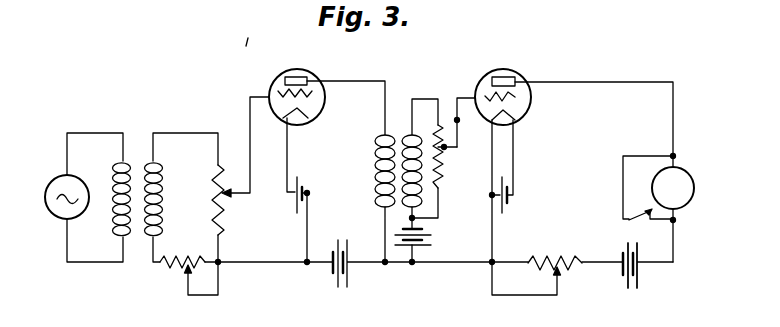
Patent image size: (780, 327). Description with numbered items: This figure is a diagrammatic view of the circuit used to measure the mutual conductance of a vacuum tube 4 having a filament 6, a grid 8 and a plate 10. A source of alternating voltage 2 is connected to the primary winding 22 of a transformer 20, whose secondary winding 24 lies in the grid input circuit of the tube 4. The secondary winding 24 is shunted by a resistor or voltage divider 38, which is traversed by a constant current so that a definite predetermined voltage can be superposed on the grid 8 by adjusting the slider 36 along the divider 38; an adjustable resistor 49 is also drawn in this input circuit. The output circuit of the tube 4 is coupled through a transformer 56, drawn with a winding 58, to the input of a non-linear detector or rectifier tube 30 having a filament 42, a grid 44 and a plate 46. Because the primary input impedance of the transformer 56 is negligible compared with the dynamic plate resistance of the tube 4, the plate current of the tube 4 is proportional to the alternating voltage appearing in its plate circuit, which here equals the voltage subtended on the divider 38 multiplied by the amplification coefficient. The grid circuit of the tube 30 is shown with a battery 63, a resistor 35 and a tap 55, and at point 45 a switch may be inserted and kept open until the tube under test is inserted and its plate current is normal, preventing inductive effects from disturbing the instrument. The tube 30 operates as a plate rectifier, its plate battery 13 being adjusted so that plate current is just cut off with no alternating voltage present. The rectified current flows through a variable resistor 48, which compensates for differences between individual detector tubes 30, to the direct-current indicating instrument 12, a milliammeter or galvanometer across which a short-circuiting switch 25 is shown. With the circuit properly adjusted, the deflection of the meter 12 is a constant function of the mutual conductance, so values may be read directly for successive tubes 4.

The source of alternating voltage 2 is at (45, 190).
The transformer 20 is at (134, 167).
The primary winding 22 is at (118, 168).
The secondary winding 24 is at (160, 170).
The voltage divider 38 is at (215, 207).
The slider 36 is at (239, 198).
The resistor 49 is at (170, 272).
The vacuum tube 4 is at (291, 85).
The plate 10 is at (293, 77).
The grid 8 is at (280, 92).
The filament 6 is at (308, 110).
The transformer 56 is at (381, 135).
The primary winding of coupling transformer 58 is at (381, 183).
The grid bias battery 63 is at (441, 236).
The resistor 35 is at (454, 163).
The tap on resistor 55 is at (453, 150).
The point in grid circuit 45 is at (461, 125).
The detector tube 30 is at (504, 93).
The plate 46 is at (506, 80).
The grid 44 is at (488, 97).
The filament 42 is at (519, 112).
The direct-current indicating instrument 12 is at (688, 170).
The shunt switch 25 is at (633, 222).
The variable resistor 48 is at (538, 257).
The plate battery 13 is at (642, 277).